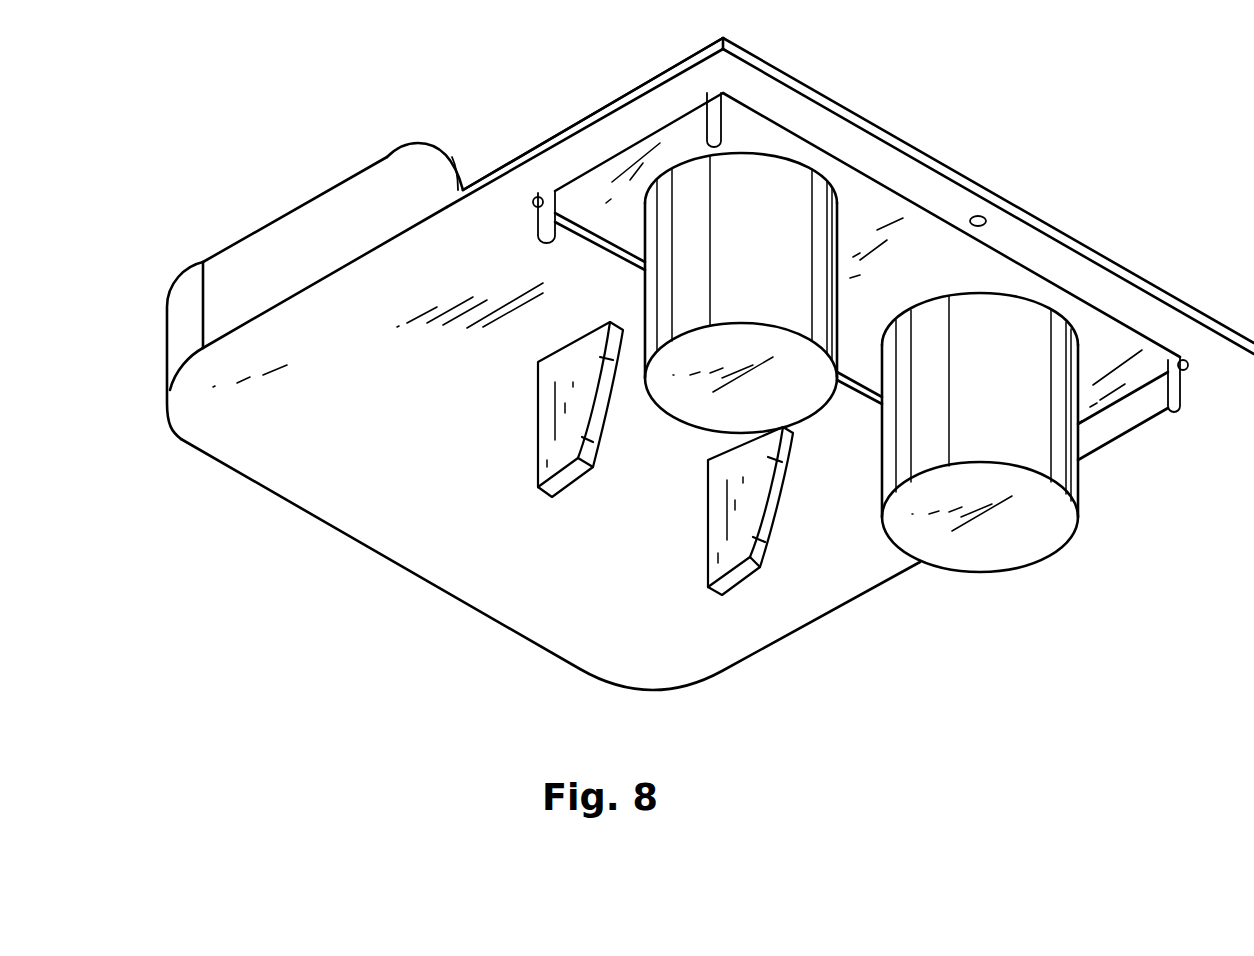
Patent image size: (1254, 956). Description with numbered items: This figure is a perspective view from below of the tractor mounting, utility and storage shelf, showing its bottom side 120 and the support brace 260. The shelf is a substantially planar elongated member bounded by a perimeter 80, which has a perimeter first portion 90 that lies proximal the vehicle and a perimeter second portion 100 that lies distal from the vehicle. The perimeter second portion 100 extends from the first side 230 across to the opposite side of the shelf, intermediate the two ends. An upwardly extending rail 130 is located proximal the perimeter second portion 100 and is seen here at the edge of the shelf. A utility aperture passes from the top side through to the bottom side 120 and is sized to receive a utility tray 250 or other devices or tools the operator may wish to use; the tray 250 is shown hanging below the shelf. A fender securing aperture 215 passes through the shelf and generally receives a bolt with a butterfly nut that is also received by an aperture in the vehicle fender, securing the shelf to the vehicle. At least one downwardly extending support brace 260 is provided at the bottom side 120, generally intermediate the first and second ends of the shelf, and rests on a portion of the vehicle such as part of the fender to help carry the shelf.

The perimeter 80 is at (388, 197).
The perimeter first portion 90 is at (882, 133).
The perimeter second portion 100 is at (293, 213).
The bottom side 120 is at (384, 515).
The upwardly extending rail 130 is at (188, 302).
The fender securing aperture 215 is at (987, 223).
The first side 230 is at (468, 190).
The utility tray 250 is at (913, 243).
The downwardly extending support brace 260 is at (720, 543).